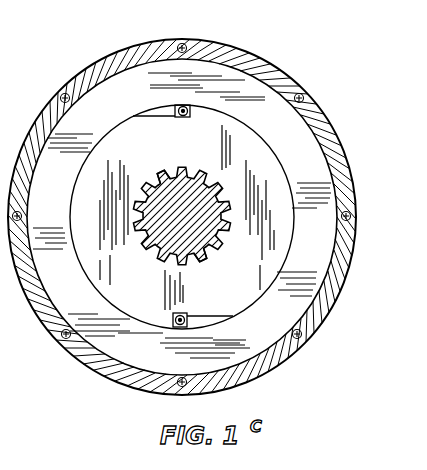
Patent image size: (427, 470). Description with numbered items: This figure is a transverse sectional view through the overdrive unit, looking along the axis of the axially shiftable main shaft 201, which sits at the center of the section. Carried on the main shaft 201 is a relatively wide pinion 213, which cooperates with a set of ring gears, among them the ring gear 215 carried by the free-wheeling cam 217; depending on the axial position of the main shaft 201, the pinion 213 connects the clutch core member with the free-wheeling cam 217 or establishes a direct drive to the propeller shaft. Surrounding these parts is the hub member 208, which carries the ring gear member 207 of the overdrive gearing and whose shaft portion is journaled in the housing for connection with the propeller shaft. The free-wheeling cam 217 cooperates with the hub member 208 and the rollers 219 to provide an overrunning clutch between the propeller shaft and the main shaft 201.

The main shaft 201 is at (152, 257).
The ring gear member 207 is at (115, 52).
The hub member 208 is at (181, 67).
The pinion 213 is at (165, 173).
The ring gear 215 is at (203, 258).
The free-wheeling cam 217 is at (258, 151).
The rollers 219 is at (184, 118).